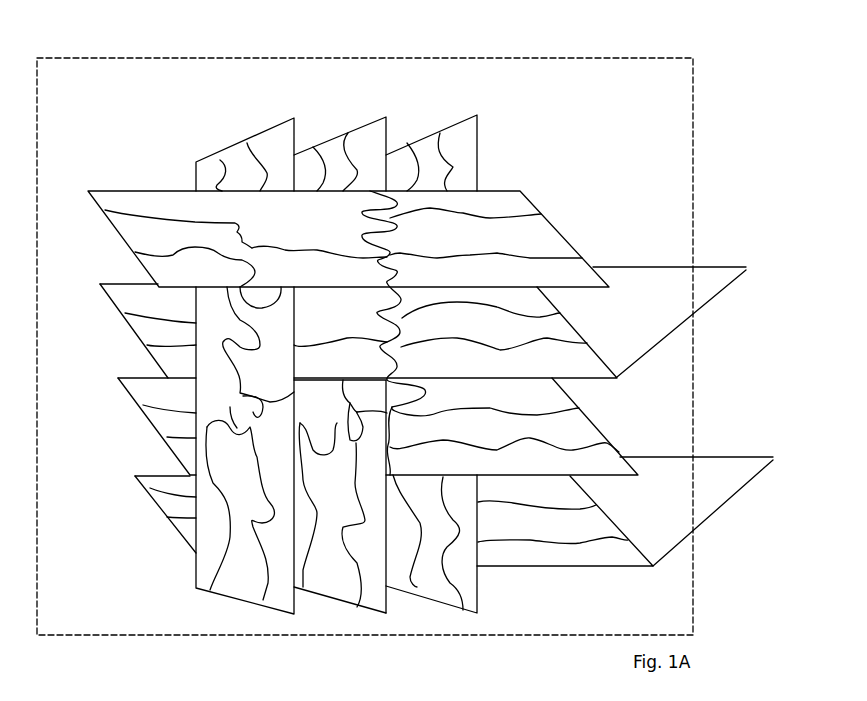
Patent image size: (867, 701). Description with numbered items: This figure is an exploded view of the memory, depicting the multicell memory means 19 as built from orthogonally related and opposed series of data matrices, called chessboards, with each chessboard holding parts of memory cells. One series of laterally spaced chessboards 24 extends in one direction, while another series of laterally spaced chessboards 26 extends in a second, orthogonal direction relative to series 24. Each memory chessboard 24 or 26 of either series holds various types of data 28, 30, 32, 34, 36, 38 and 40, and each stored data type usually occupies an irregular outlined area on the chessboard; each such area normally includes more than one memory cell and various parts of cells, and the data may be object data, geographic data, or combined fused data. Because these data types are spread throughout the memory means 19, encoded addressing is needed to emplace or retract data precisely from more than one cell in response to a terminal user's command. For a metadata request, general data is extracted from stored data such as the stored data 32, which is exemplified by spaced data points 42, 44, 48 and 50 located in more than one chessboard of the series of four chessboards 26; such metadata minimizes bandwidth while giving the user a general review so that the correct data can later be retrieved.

The multicell memory means 19 is at (516, 58).
The chessboards 24 is at (293, 133).
The chessboards 26 is at (697, 411).
The stored data 28 is at (344, 285).
The stored data 30 is at (465, 206).
The stored data 32 is at (461, 385).
The stored data 34 is at (486, 268).
The stored data 36 is at (319, 265).
The stored data 38 is at (195, 267).
The stored data 40 is at (178, 229).
The data point 42 is at (592, 523).
The data point 44 is at (542, 432).
The data point 48 is at (568, 332).
The data point 50 is at (545, 225).